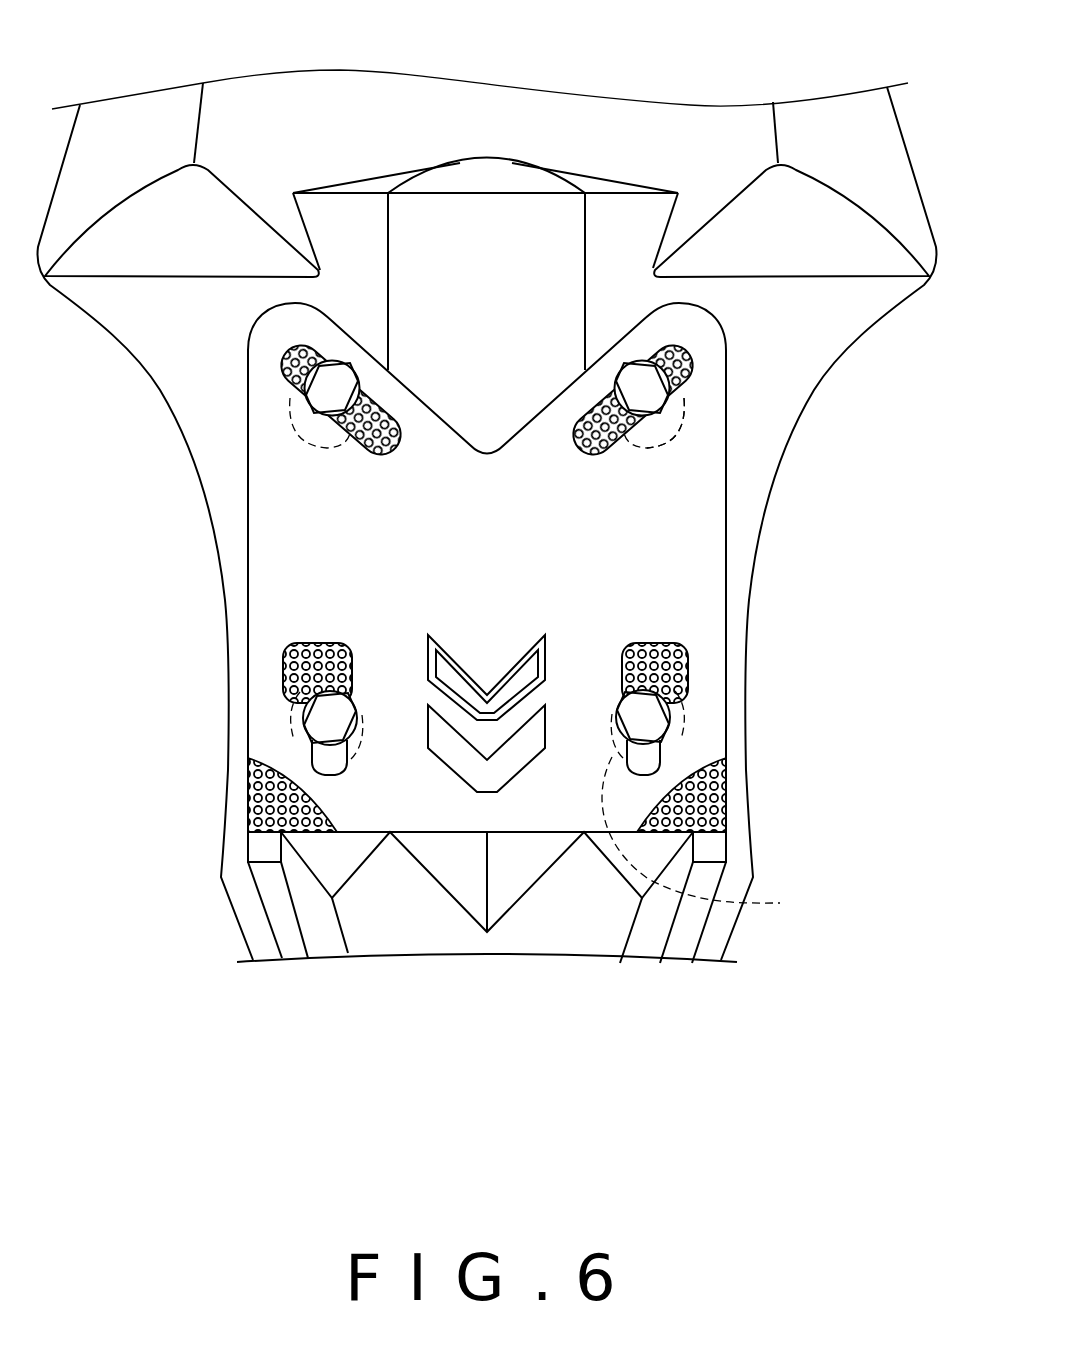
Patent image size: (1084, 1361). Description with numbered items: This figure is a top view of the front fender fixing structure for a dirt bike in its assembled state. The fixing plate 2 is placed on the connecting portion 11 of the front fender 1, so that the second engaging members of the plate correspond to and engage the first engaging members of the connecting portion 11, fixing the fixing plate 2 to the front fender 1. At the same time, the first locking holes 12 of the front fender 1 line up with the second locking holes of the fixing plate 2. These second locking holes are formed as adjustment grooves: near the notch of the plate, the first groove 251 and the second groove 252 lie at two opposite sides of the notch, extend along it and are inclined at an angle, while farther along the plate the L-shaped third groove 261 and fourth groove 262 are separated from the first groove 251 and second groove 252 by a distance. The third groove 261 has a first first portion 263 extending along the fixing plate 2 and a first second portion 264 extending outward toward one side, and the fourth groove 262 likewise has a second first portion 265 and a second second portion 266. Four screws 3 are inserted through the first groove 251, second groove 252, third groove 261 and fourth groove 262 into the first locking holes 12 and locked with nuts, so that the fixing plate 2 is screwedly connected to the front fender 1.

The front fender 1 is at (827, 122).
The fixing plate 2 is at (683, 577).
The screw 3 is at (645, 397).
The connecting portion 11 is at (722, 792).
The first locking hole 12 is at (648, 447).
The first groove 251 is at (283, 357).
The second groove 252 is at (690, 350).
The third groove 261 is at (219, 709).
The fourth groove 262 is at (763, 709).
The first first portion 263 is at (316, 757).
The first second portion 264 is at (283, 657).
The second first portion 265 is at (656, 757).
The second second portion 266 is at (690, 657).